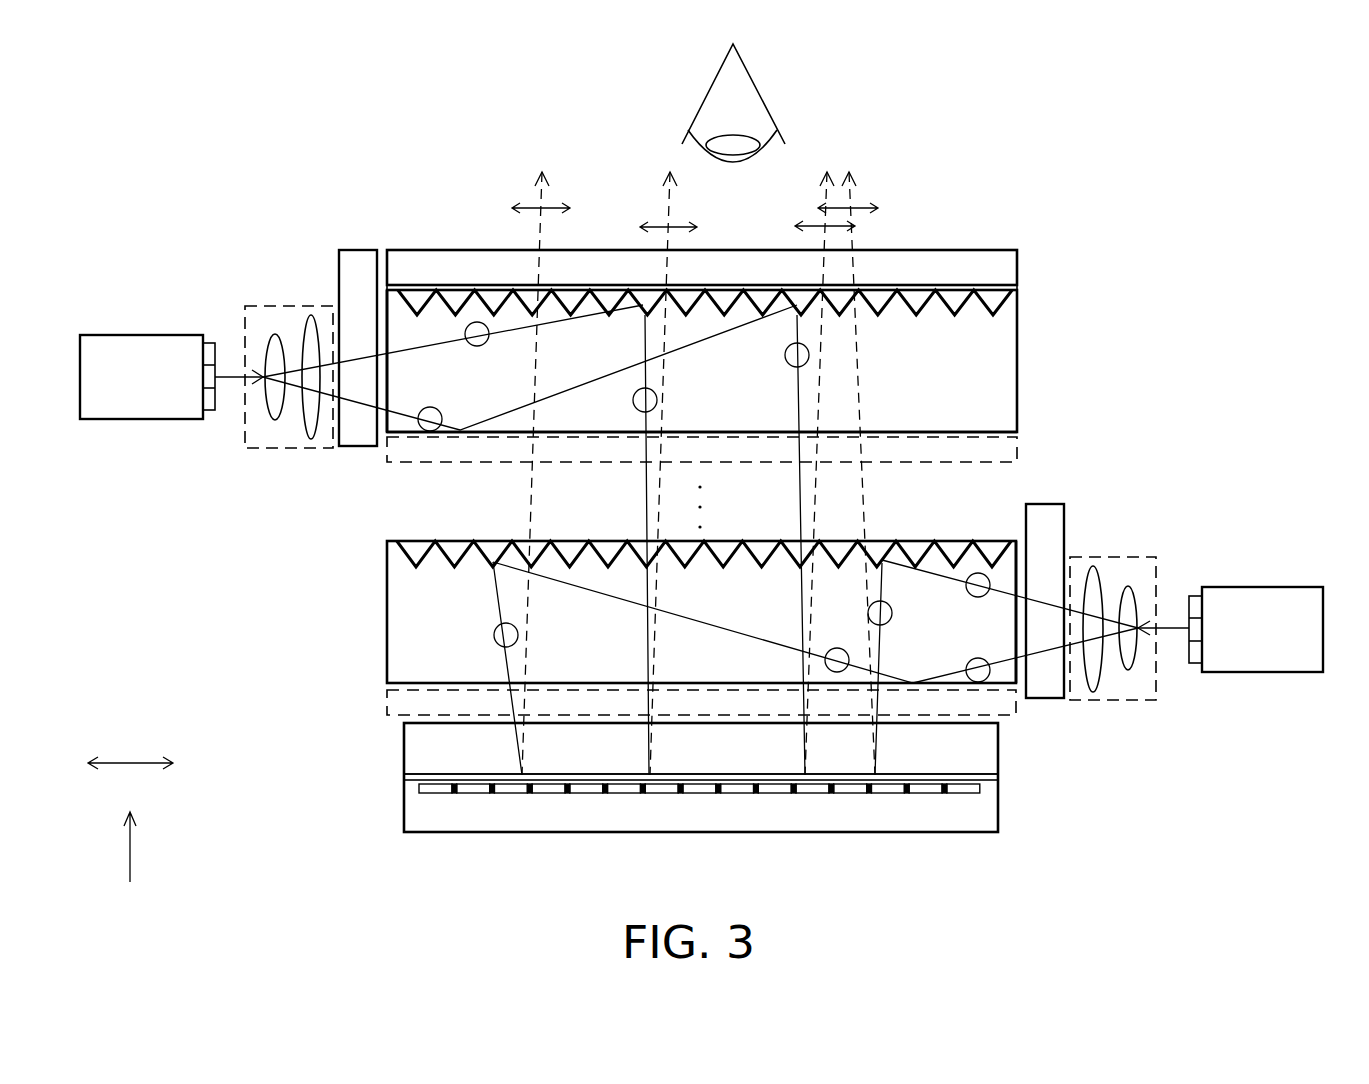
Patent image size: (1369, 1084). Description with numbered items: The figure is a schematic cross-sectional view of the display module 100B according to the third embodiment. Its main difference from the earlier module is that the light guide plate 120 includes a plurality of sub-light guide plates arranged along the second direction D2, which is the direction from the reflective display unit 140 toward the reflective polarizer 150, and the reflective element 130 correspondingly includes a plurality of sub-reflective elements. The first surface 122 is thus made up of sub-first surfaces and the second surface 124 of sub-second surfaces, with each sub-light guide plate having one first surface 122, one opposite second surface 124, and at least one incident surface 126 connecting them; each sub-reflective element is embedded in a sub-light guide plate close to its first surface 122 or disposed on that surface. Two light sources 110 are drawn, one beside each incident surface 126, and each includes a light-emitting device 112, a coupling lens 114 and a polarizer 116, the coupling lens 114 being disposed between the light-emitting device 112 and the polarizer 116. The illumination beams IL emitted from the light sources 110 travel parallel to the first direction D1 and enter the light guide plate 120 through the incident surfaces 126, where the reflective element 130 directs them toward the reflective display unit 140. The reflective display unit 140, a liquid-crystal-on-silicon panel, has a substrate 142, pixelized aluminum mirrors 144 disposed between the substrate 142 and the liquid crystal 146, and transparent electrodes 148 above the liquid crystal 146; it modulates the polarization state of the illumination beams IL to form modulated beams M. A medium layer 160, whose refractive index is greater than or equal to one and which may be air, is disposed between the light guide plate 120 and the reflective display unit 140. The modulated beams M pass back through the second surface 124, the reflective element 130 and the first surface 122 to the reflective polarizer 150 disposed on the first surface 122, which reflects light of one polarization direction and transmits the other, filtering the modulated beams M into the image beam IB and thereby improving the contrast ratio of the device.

The display module 100B is at (1258, 903).
The light source 110 is at (1174, 665).
The light-emitting device 112 is at (1254, 681).
The coupling lens 114 is at (1133, 703).
The polarizer 116 is at (1055, 696).
The light guide plate 120 is at (695, 363).
The first surface 122 is at (393, 288).
The second surface 124 is at (437, 430).
The incident surface 126 is at (390, 428).
The reflective element 130 is at (1003, 302).
The reflective display unit 140 is at (701, 832).
The substrate 142 is at (597, 815).
The pixelized aluminum mirrors 144 is at (547, 791).
The liquid crystal 146 is at (482, 779).
The transparent electrodes 148 is at (433, 764).
The reflective polarizer 150 is at (452, 262).
The medium layer 160 is at (1017, 455).
The image beam IB is at (852, 196).
The illumination beams IL is at (1170, 627).
The modulated beams M is at (872, 742).
The first direction D1 is at (130, 746).
The second direction D2 is at (146, 847).